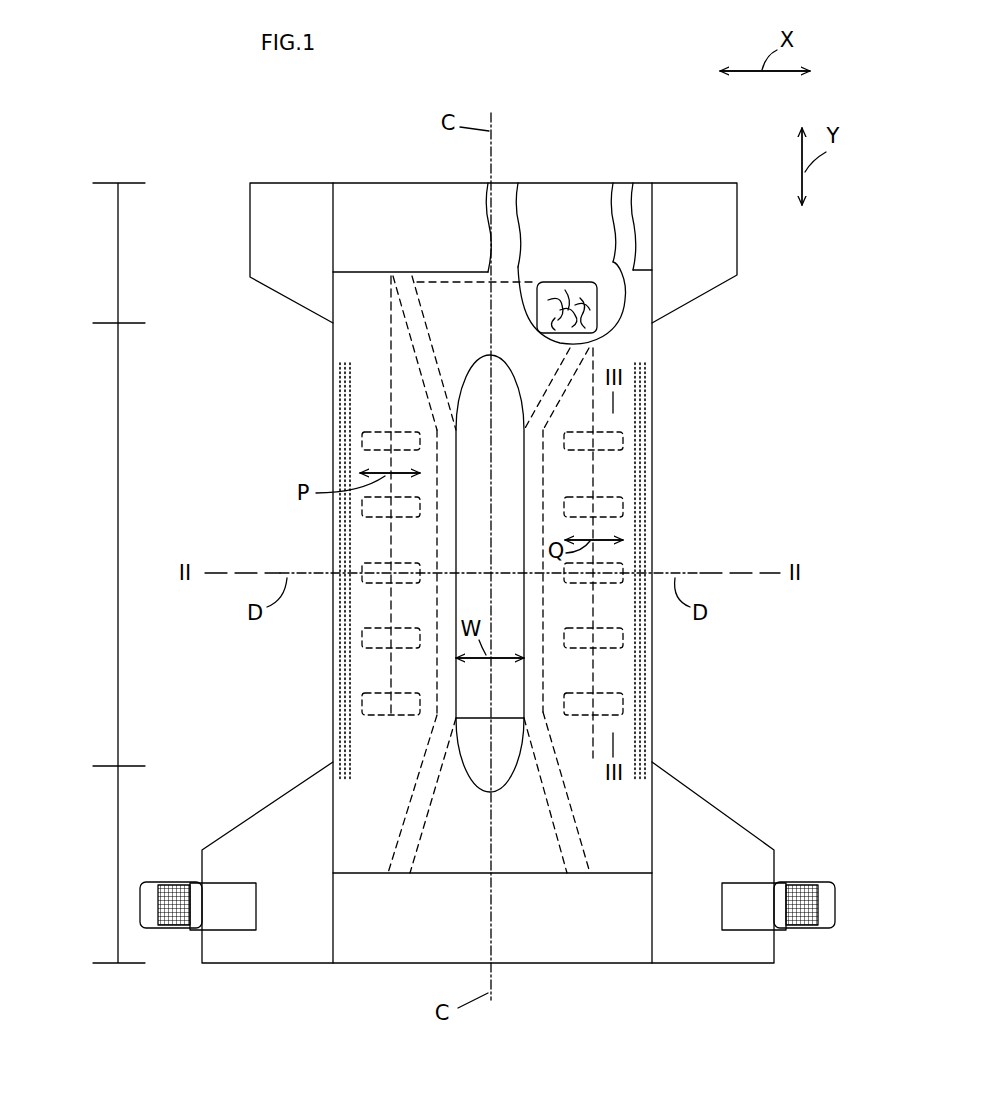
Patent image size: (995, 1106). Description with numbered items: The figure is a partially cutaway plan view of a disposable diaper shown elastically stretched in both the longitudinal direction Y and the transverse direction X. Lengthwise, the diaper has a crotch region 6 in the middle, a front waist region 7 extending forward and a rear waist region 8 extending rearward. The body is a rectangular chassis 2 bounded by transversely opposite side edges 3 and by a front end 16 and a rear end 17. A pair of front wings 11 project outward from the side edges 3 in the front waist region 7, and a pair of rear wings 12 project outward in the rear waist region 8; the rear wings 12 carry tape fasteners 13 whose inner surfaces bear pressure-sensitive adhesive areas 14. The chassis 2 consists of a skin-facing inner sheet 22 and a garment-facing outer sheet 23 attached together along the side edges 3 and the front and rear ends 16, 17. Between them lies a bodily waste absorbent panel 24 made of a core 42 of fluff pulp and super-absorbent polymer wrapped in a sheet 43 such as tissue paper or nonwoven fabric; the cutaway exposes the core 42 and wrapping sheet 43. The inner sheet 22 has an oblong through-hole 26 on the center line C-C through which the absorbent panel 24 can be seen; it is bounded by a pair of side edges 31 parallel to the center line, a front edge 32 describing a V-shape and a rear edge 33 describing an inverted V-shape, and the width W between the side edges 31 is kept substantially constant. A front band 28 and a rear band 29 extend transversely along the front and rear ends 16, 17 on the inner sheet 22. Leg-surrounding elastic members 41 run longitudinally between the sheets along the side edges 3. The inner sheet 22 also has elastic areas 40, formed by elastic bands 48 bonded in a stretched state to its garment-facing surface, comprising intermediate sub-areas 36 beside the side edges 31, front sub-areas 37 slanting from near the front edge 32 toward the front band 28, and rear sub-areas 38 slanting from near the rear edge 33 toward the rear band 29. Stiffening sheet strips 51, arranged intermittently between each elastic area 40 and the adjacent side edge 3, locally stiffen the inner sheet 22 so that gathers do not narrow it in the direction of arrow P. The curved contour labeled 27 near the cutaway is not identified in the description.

The chassis 2 is at (392, 966).
The transversely opposite side edges 3 is at (333, 342).
The crotch region 6 is at (115, 580).
The front waist region 7 is at (118, 252).
The rear waist region 8 is at (112, 878).
The front wings 11 is at (293, 197).
The rear wings 12 is at (273, 950).
The tape fasteners 13 is at (152, 884).
The pressure-sensitive adhesive areas 14 is at (178, 930).
The front end 16 is at (385, 183).
The rear end 17 is at (607, 964).
The inner sheet 22 is at (640, 298).
The outer sheet 23 is at (572, 197).
The bodily waste absorbent panel 24 is at (467, 695).
The through-hole 26 is at (520, 470).
The pocket 27 is at (502, 290).
The front band 28 is at (438, 212).
The rear band 29 is at (540, 950).
The side edges of the through-hole 31 is at (448, 517).
The front edge of the through-hole 32 is at (497, 372).
The rear edge of the through-hole 33 is at (502, 770).
The intermediate sub-areas 36 is at (448, 470).
The front sub-areas 37 is at (413, 311).
The rear sub-areas 38 is at (412, 827).
The elastic areas 40 is at (427, 347).
The leg-surrounding elastic members 41 is at (348, 408).
The core 42 is at (577, 300).
The wrapping sheet 43 is at (537, 300).
The elastic bands 48 is at (420, 785).
The stiffening sheet strips 51 is at (360, 637).